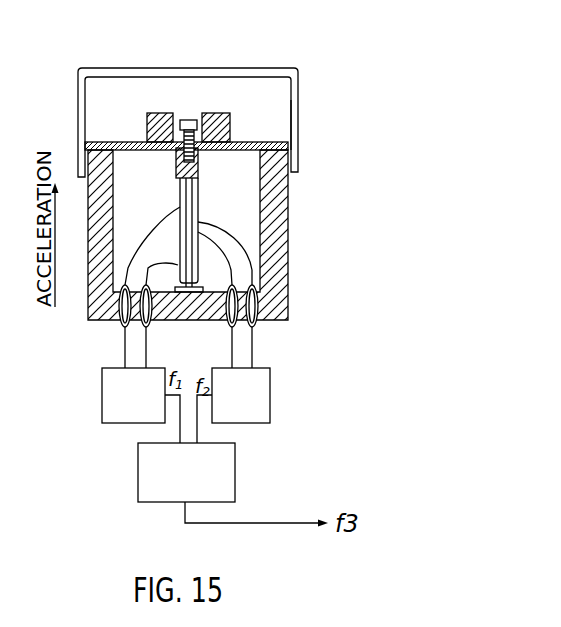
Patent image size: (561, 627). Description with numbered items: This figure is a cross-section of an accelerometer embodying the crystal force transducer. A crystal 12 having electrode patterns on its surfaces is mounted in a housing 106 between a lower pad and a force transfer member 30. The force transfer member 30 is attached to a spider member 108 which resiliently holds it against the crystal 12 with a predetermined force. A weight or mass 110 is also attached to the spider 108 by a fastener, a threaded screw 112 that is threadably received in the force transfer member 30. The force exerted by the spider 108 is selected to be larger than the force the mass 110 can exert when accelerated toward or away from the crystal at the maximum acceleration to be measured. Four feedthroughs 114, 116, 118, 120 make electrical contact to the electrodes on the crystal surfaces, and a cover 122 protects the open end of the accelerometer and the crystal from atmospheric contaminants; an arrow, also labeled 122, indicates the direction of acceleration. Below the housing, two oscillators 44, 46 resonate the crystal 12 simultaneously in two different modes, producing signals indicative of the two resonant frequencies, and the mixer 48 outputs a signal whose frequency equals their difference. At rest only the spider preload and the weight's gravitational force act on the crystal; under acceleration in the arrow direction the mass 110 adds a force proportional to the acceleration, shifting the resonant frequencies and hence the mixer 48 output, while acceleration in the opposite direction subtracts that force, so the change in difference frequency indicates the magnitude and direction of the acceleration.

The cover 122 is at (218, 68).
The weight or mass 110 is at (147, 124).
The threaded screw 112 is at (188, 120).
The spider member 108 is at (252, 142).
The force transfer member 30 is at (199, 163).
The crystal 12 is at (180, 198).
The housing 106 is at (275, 218).
The feedthrough 114 is at (124, 331).
The feedthrough 116 is at (147, 330).
The feedthrough 118 is at (231, 333).
The feedthrough 120 is at (256, 332).
The oscillator 44 is at (102, 404).
The oscillator 46 is at (272, 405).
The mixer 48 is at (237, 456).